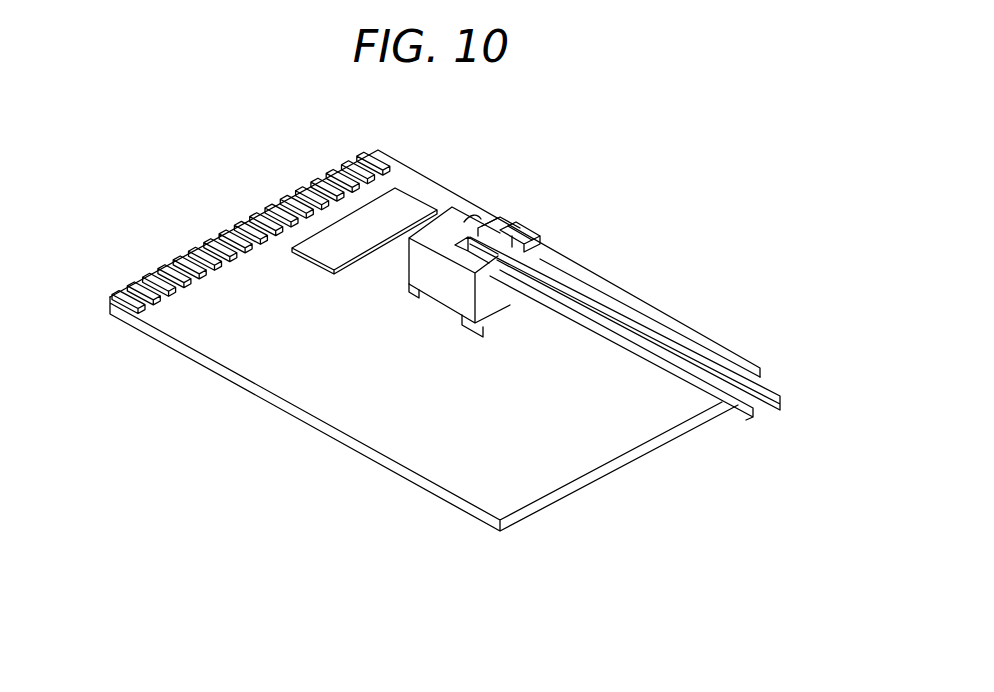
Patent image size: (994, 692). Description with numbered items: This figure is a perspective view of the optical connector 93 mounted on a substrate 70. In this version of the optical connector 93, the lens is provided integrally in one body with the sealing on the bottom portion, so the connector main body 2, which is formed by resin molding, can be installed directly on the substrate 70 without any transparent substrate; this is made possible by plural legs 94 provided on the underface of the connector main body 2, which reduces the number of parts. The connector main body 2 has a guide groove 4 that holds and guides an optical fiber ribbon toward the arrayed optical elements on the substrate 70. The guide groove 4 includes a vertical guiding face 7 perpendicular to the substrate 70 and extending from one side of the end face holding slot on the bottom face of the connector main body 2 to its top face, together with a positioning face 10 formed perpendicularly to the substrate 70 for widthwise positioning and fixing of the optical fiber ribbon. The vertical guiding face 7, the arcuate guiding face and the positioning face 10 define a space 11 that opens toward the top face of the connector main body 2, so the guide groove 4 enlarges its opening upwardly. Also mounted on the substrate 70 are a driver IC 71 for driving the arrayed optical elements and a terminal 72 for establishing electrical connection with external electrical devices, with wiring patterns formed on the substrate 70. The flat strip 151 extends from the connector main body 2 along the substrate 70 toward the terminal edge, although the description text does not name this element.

The substrate 70 is at (555, 479).
The terminal 72 is at (112, 303).
The driver IC 71 is at (310, 257).
The connector main body 2 is at (441, 290).
The legs 94 is at (486, 324).
The flat strip 151 is at (767, 393).
The guide groove 4 is at (530, 240).
The positioning face 10 is at (523, 240).
The space 11 is at (502, 240).
The vertical guiding face 7 is at (482, 226).
The optical connector 93 is at (479, 203).